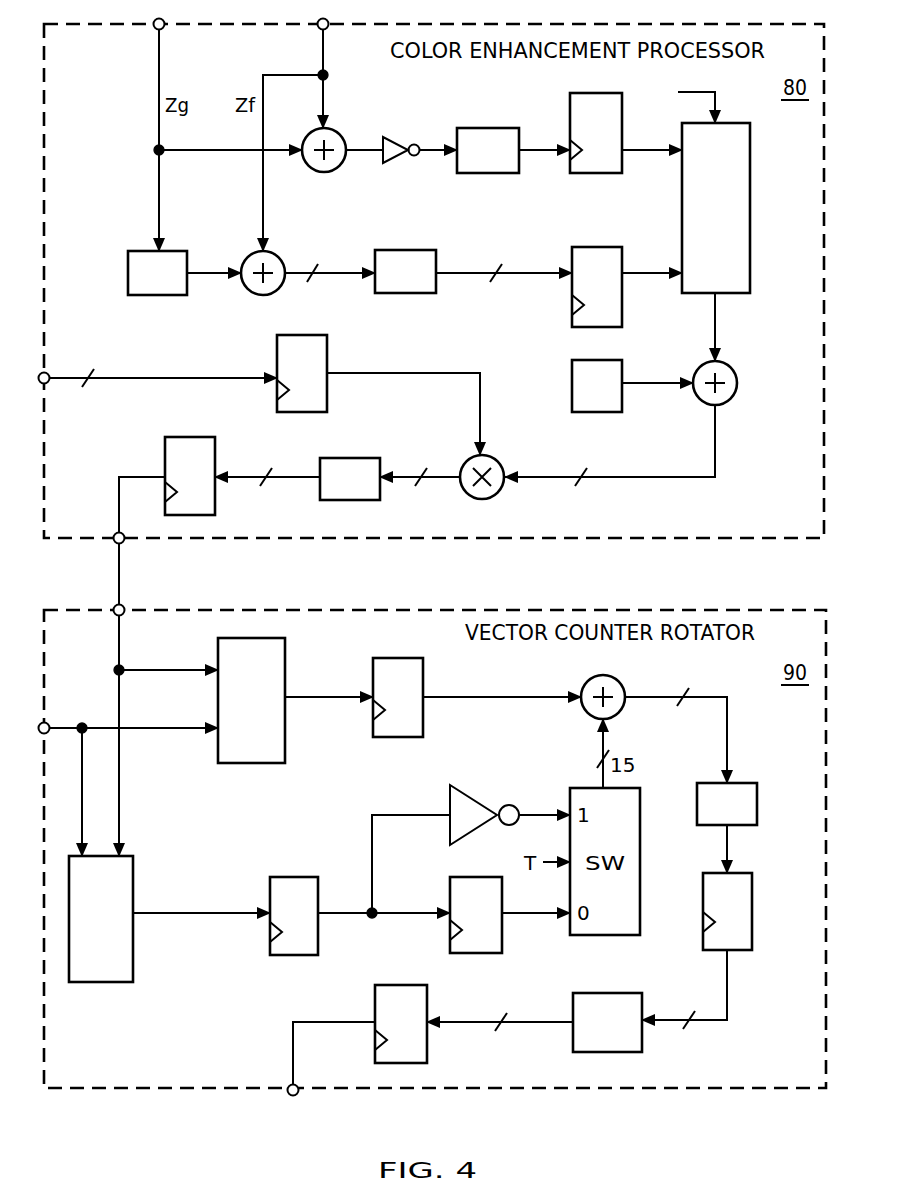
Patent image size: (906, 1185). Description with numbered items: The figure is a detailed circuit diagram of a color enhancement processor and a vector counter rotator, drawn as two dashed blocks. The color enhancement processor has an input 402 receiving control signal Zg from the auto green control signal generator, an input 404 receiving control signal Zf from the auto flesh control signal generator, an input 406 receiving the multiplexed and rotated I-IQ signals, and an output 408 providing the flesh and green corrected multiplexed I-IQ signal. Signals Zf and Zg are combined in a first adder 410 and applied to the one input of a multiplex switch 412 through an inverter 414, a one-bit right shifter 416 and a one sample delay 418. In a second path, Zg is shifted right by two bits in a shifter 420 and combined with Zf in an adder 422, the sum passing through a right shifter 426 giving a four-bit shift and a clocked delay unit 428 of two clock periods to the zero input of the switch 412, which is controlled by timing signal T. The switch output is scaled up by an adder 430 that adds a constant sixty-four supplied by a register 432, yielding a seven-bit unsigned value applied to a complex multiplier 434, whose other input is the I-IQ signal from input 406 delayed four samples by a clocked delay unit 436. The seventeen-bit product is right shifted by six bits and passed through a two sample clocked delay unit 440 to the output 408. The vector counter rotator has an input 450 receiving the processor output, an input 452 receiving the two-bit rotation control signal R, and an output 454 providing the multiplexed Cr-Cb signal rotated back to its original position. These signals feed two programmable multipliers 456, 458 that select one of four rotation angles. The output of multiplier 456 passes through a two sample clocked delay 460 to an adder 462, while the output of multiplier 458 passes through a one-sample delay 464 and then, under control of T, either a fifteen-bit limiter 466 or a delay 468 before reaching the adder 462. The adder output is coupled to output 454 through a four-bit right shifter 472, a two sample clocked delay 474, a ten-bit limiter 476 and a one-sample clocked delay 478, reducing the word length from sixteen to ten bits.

The input 402 is at (155, 28).
The input 404 is at (320, 30).
The input 406 is at (46, 372).
The output 408 is at (115, 543).
The first adder 410 is at (335, 175).
The multiplex switch 412 is at (752, 290).
The inverter 414 is at (397, 135).
The one-bit right shifter 416 is at (472, 127).
The one sample delay 418 is at (570, 105).
The shifter 420 is at (128, 265).
The adder 422 is at (258, 298).
The right shifter 426 is at (418, 250).
The clocked delay unit 428 is at (572, 305).
The adder 430 is at (738, 396).
The register 432 is at (604, 413).
The complex multiplier 434 is at (495, 465).
The clocked delay unit 436 is at (320, 335).
The 2 sample clocked delay unit 440 is at (165, 455).
The input 450 is at (116, 615).
The input 452 is at (48, 724).
The output 454 is at (296, 1084).
The programmable multiplier 456 is at (240, 764).
The programmable multiplier 458 is at (133, 966).
The two sample clocked delay 460 is at (375, 715).
The adder 462 is at (587, 714).
The one-sample delay 464 is at (270, 877).
The 15-bit limiter 466 is at (452, 830).
The delay 468 is at (452, 930).
The 4-bit right shifter 472 is at (757, 798).
The two sample clocked delay 474 is at (752, 940).
The 10 bit limiter 476 is at (642, 1045).
The one-sample clocked delay 478 is at (427, 1050).